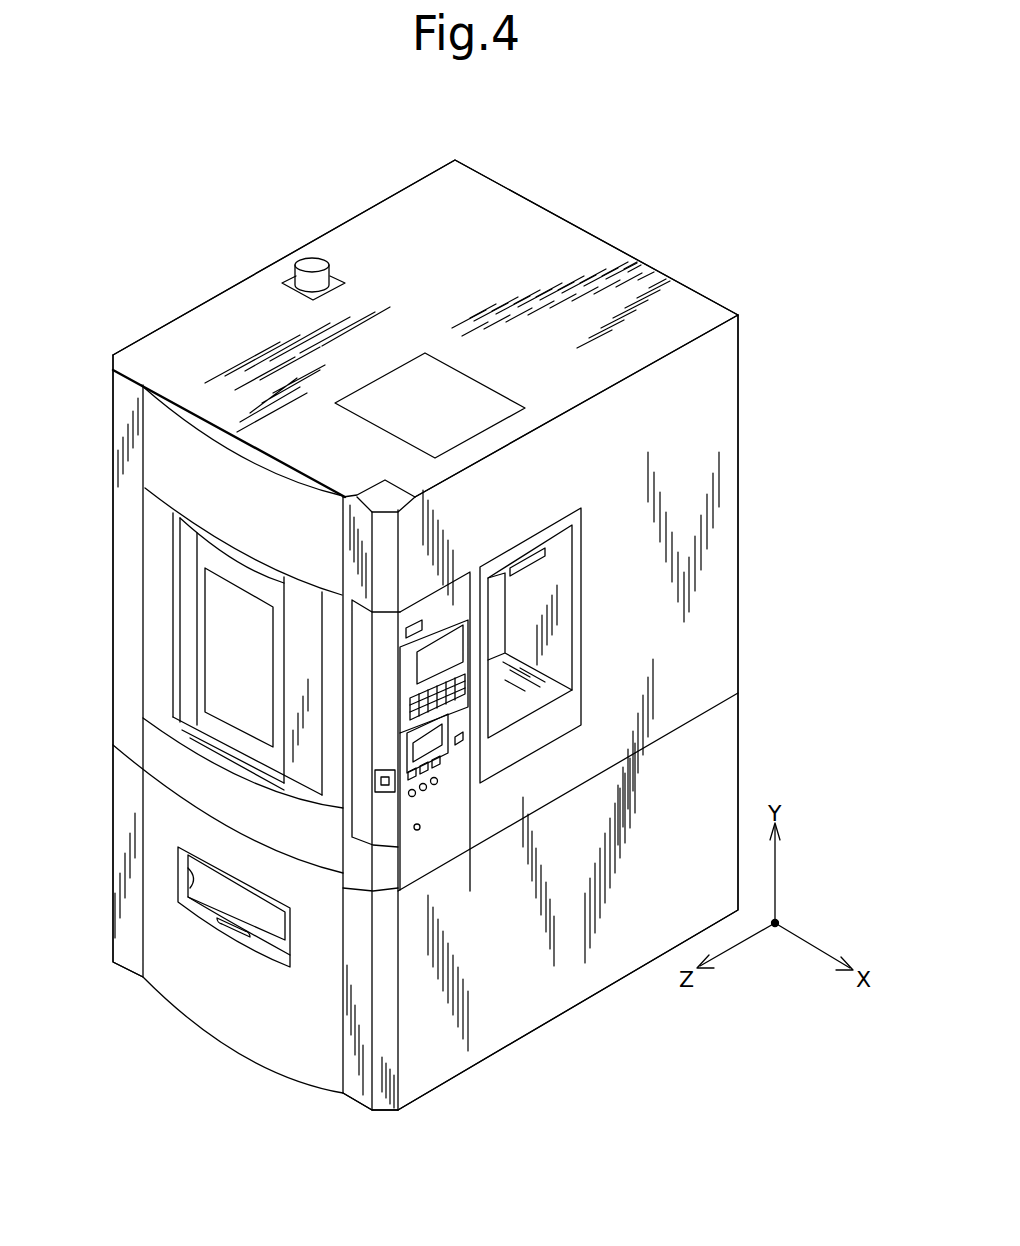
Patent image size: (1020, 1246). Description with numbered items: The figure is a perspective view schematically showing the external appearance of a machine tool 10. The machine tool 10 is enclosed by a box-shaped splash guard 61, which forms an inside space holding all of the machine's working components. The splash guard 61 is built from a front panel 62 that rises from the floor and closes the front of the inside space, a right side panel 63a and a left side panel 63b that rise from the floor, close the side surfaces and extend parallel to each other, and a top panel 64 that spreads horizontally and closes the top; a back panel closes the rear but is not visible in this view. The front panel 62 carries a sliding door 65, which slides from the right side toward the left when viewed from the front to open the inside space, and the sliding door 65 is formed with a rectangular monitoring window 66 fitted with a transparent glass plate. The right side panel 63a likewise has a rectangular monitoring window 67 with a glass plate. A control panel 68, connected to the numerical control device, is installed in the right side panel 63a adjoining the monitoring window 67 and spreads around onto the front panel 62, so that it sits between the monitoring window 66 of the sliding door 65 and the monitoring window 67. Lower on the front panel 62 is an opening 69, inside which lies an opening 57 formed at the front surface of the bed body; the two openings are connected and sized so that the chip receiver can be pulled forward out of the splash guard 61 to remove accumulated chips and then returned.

The machine tool 10 is at (630, 204).
The opening 57 is at (192, 883).
The splash guard 61 is at (713, 301).
The front panel 62 is at (127, 500).
The right side panel 63a is at (717, 391).
The left side panel 63b is at (330, 232).
The top panel 64 is at (520, 203).
The sliding door 65 is at (187, 637).
The monitoring window 66 is at (217, 682).
The monitoring window 67 is at (496, 627).
The control panel 68 is at (468, 787).
The opening 69 is at (290, 945).